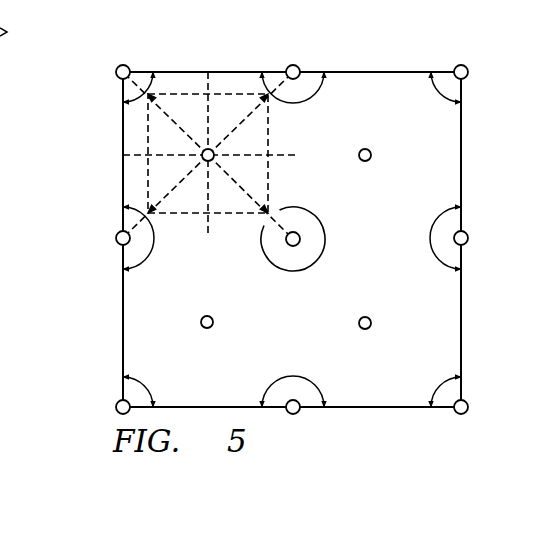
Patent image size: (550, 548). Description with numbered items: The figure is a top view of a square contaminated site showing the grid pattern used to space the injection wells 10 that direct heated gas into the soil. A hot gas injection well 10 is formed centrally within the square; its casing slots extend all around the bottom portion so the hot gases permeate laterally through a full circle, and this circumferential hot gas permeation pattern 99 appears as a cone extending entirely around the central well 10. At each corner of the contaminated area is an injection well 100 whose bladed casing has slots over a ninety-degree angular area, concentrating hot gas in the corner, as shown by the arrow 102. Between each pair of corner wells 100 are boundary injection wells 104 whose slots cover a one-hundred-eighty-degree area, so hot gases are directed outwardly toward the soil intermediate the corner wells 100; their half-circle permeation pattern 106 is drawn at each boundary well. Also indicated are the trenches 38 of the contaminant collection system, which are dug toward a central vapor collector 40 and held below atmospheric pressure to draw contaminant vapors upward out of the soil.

The hot gas injection well 10 is at (314, 220).
The trenches 38 is at (250, 153).
The central vapor collector 40 is at (211, 149).
The circumferential hot gas permeation pattern 99 is at (319, 259).
The corner injection well 100 is at (116, 70).
The arrow 102 is at (150, 86).
The boundary injection well 104 is at (297, 67).
The edge semicircular sweep 106 is at (316, 94).